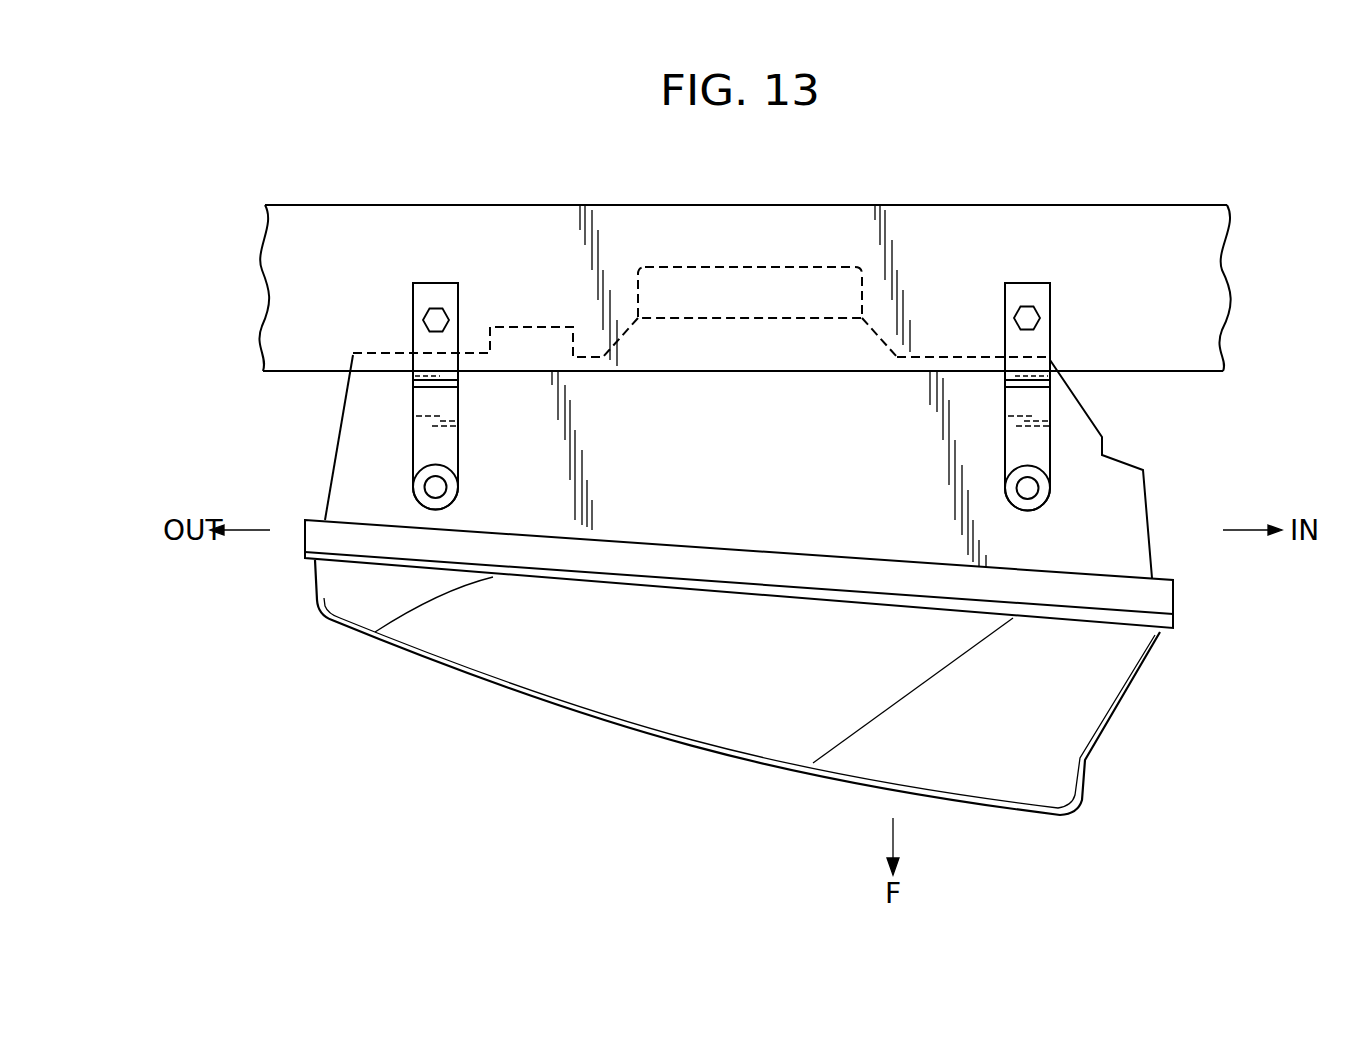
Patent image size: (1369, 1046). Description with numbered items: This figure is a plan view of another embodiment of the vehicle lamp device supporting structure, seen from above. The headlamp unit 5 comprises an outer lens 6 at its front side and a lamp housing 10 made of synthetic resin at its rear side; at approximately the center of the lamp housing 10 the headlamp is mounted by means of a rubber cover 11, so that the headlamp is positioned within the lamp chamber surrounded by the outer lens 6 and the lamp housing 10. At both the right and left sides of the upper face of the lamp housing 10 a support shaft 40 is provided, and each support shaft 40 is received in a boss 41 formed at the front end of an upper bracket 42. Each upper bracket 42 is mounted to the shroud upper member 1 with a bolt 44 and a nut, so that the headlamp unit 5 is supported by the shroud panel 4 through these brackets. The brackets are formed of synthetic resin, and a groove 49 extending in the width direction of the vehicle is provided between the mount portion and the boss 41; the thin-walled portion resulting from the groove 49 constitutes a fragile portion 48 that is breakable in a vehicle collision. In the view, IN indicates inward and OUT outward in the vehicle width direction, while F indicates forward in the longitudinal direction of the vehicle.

The shroud upper member 1 is at (822, 222).
The shroud panel 4 is at (246, 287).
The headlamp unit 5 is at (661, 752).
The outer lens 6 is at (790, 745).
The lamp housing 10 is at (708, 472).
The rubber cover 11 is at (632, 268).
The support shaft 40 is at (435, 488).
The boss 41 is at (413, 493).
The upper bracket 42 is at (460, 410).
The bolt 44 is at (436, 318).
The fragile portion 48 is at (413, 390).
The groove 49 is at (428, 393).